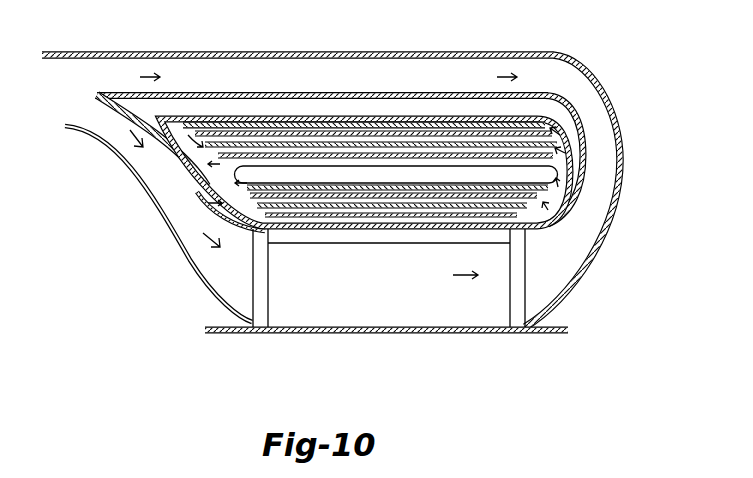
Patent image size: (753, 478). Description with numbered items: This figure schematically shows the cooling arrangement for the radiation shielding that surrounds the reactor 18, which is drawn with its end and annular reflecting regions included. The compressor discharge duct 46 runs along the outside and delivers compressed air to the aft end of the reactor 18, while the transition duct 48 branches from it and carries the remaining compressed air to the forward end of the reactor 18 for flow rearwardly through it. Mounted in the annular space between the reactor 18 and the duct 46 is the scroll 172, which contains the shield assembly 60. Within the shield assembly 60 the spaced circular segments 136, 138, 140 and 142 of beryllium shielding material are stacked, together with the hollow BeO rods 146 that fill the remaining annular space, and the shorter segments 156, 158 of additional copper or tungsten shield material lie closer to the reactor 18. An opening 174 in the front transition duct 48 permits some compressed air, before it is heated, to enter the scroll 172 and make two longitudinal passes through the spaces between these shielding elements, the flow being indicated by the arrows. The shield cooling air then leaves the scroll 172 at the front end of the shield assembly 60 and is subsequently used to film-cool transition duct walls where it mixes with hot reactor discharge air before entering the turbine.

The reactor 18 is at (403, 286).
The compressor discharge duct 46 is at (383, 52).
The transition duct 48 is at (182, 255).
The shield assembly 60 is at (418, 144).
The circular segment 136 is at (547, 122).
The circular segment 138 is at (572, 125).
The circular segment 140 is at (585, 141).
The circular segment 142 is at (579, 157).
The rod 146 is at (560, 174).
The shorter segment 156 is at (537, 204).
The shorter segment 158 is at (533, 221).
The scroll 172 is at (537, 115).
The opening 174 is at (200, 185).